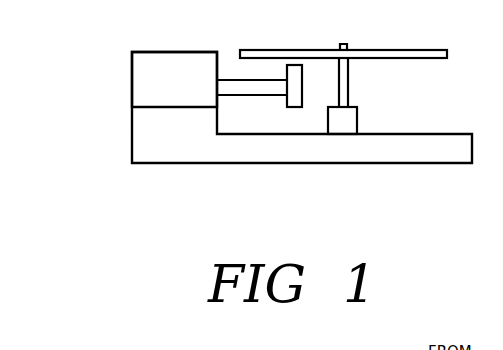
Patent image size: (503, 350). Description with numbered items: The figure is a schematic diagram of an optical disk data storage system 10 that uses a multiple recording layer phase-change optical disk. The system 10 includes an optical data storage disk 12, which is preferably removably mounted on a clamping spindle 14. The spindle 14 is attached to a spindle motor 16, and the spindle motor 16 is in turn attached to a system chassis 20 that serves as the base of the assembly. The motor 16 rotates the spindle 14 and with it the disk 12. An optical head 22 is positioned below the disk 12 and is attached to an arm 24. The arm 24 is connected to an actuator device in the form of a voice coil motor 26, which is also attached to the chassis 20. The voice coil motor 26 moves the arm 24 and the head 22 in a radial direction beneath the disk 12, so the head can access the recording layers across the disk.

The optical disk data storage system 10 is at (160, 195).
The optical data storage disk 12 is at (427, 50).
The clamping spindle 14 is at (348, 73).
The spindle motor 16 is at (352, 122).
The system chassis 20 is at (438, 157).
The optical head 22 is at (296, 65).
The arm 24 is at (226, 80).
The voice coil motor 26 is at (143, 58).